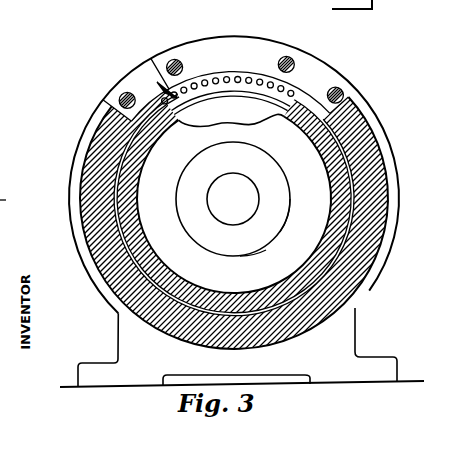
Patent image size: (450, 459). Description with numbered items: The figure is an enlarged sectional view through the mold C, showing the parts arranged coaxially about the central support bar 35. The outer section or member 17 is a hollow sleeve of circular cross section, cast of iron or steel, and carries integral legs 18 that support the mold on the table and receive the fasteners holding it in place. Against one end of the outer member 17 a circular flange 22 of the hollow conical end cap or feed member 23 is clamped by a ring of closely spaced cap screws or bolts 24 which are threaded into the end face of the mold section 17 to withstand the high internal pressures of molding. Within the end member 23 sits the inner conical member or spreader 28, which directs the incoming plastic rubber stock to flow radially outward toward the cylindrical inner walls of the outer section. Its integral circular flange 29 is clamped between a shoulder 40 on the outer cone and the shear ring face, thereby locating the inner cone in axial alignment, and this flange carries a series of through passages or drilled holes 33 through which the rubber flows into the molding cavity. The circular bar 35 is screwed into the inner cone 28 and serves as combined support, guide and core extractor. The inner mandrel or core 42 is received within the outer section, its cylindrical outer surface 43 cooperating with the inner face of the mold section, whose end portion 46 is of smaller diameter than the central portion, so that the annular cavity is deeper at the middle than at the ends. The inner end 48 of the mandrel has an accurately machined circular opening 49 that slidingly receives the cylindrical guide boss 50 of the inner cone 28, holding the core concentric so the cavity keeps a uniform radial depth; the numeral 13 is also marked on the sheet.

The motor 13 is at (449, 154).
The outer section or member 17 is at (370, 277).
The integral legs 18 is at (342, 337).
The circular flange 22 is at (213, 42).
The hollow conical end cap or feed member 23 is at (75, 162).
The cap screws or bolts 24 is at (295, 63).
The inner conical member or spreader 28 is at (183, 190).
The integral circular flange 29 is at (198, 77).
The through passages or drilled holes 33 is at (162, 84).
The circular bar 35 is at (216, 221).
The shoulder 40 is at (110, 103).
The inner mandrel or core 42 is at (343, 233).
The cylindrical outer surface 43 is at (352, 186).
The end portion 46 is at (330, 137).
The inner end of the mandrel 48 is at (265, 265).
The circular opening 49 is at (283, 210).
The cylindrical guide boss 50 is at (286, 165).
The mold C is at (82, 126).